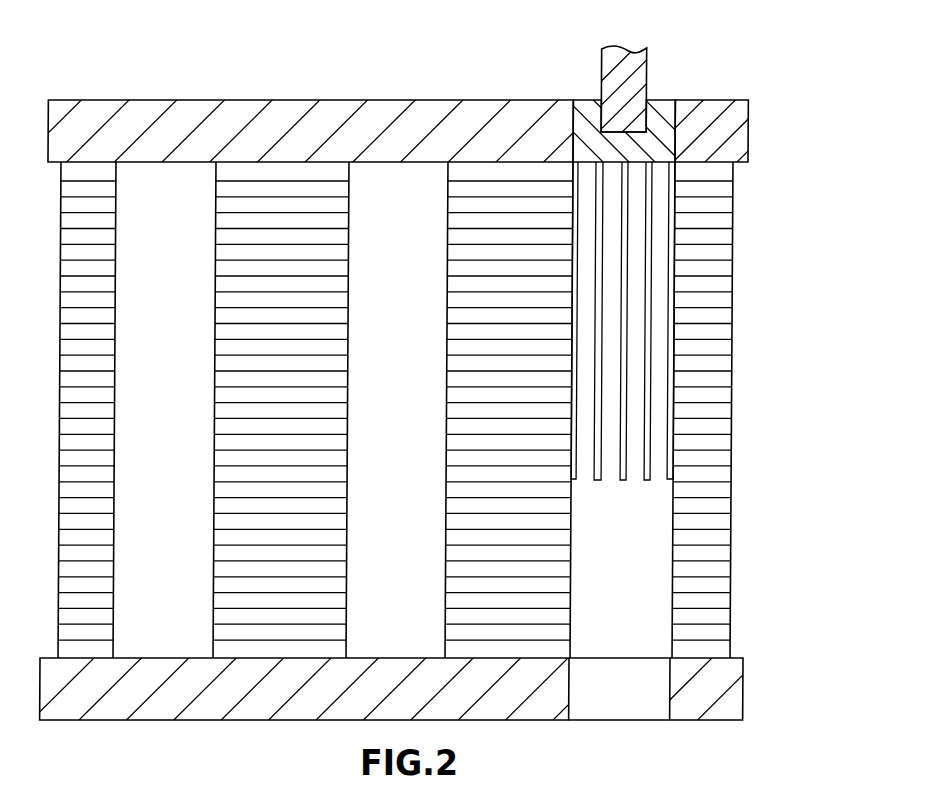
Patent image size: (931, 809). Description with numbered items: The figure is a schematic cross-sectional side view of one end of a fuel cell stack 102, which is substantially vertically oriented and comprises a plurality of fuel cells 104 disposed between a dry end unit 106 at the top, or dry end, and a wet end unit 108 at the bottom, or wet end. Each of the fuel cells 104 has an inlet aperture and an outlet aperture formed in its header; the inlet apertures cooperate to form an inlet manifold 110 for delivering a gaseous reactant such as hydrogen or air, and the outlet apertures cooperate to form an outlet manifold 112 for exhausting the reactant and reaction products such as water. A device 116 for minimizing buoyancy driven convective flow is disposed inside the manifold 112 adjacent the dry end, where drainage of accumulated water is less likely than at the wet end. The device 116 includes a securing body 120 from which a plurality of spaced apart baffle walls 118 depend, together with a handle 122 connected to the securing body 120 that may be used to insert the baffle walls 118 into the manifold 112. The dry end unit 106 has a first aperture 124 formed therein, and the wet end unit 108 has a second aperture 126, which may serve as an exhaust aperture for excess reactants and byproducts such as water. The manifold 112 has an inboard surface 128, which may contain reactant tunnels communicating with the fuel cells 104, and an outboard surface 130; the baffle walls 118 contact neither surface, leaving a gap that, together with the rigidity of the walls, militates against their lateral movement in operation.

The fuel cell stack 102 is at (88, 58).
The fuel cells 104 is at (215, 473).
The dry end unit 106 is at (382, 102).
The wet end unit 108 is at (500, 721).
The inlet manifold 110 is at (187, 581).
The outlet manifold 112 is at (639, 599).
The device 116 is at (553, 53).
The spaced apart baffle walls 118 is at (646, 483).
The securing body 120 is at (662, 108).
The handle 122 is at (634, 67).
The first aperture 124 is at (675, 133).
The second aperture 126 is at (673, 690).
The inboard surface 128 is at (568, 633).
The outboard surface 130 is at (656, 528).